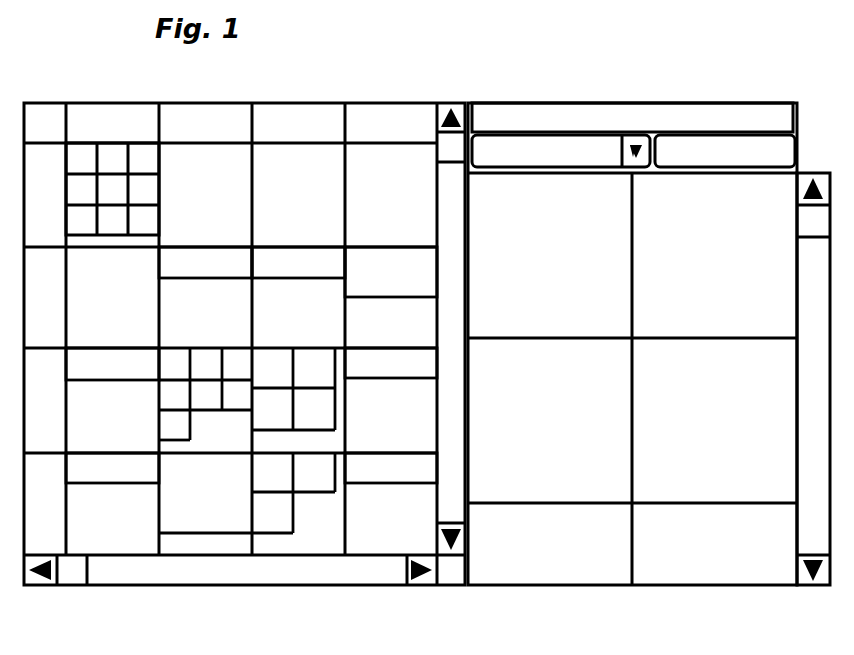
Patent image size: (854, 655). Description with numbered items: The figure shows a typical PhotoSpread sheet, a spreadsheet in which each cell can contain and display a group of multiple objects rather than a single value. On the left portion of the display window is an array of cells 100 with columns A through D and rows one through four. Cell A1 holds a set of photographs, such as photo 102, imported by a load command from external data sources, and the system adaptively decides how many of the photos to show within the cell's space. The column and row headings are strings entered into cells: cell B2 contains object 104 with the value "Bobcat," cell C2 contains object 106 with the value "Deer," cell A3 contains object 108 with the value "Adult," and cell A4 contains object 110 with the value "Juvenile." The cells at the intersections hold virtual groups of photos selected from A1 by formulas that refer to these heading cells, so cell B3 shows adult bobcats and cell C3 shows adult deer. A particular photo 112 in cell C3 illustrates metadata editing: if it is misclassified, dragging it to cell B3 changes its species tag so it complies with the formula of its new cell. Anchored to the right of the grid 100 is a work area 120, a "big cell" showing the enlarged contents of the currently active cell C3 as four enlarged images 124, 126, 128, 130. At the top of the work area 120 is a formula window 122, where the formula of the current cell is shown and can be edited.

The array of cells 100 is at (288, 77).
The photo 102 is at (138, 152).
The object 104 is at (205, 313).
The object 106 is at (298, 313).
The object 108 is at (112, 416).
The object 110 is at (112, 519).
The photo 112 is at (313, 410).
The work area 120 is at (638, 77).
The formula window 122 is at (560, 117).
The enlarged image 124 is at (550, 255).
The enlarged image 126 is at (714, 255).
The enlarged image 128 is at (550, 420).
The enlarged image 130 is at (714, 420).